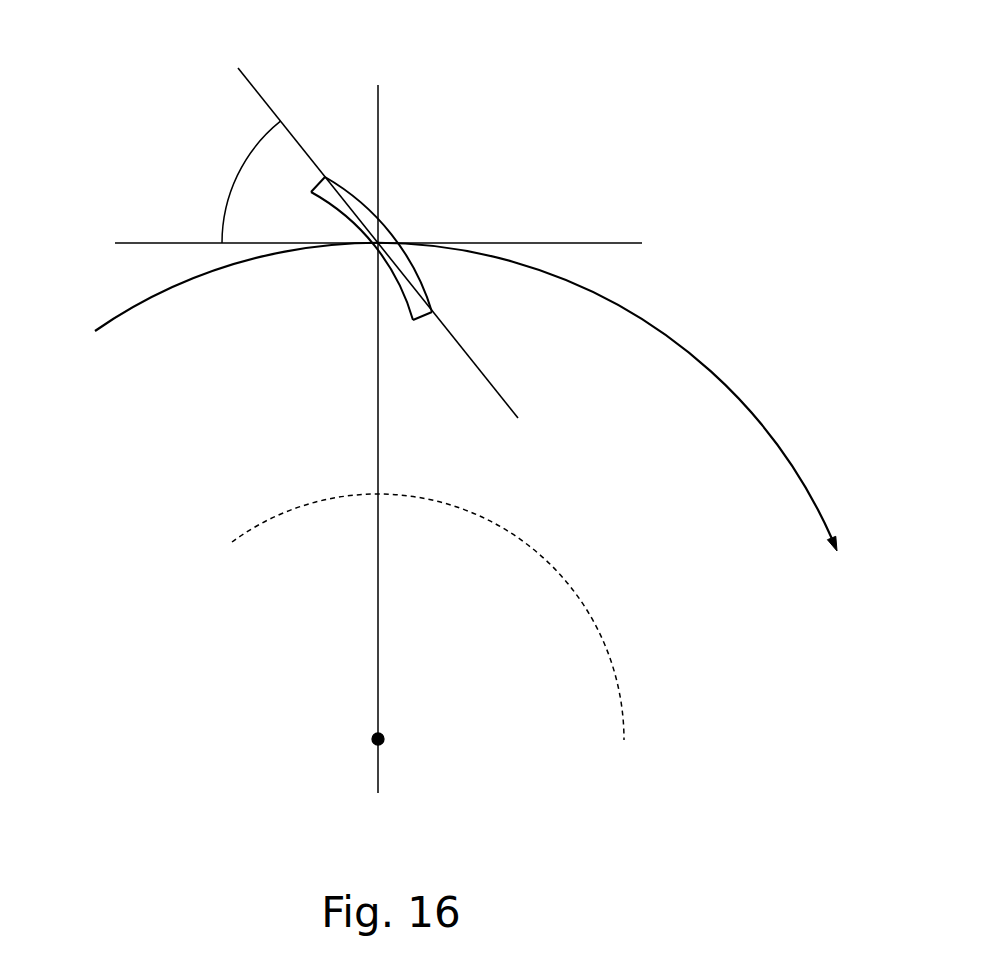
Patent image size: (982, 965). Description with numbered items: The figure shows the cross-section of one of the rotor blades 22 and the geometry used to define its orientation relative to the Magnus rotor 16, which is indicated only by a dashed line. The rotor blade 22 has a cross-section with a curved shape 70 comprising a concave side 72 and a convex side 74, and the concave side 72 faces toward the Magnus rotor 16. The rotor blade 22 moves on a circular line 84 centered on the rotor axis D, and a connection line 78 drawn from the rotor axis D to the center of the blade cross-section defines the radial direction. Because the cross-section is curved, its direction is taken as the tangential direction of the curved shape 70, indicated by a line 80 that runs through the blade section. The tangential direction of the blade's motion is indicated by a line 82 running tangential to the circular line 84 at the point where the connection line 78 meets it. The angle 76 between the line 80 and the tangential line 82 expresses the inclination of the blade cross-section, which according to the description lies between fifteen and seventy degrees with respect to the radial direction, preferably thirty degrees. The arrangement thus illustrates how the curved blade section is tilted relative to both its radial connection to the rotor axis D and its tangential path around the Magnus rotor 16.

The Magnus rotor 16 is at (556, 547).
The rotor blade 22 is at (466, 353).
The curved shape 70 is at (393, 241).
The concave side 72 is at (405, 311).
The convex side 74 is at (389, 230).
The angle 76 is at (241, 171).
The connection line 78 is at (380, 635).
The line 80 is at (261, 91).
The tangential line 82 is at (131, 242).
The circular line 84 is at (692, 352).
The rotor axis D is at (384, 740).